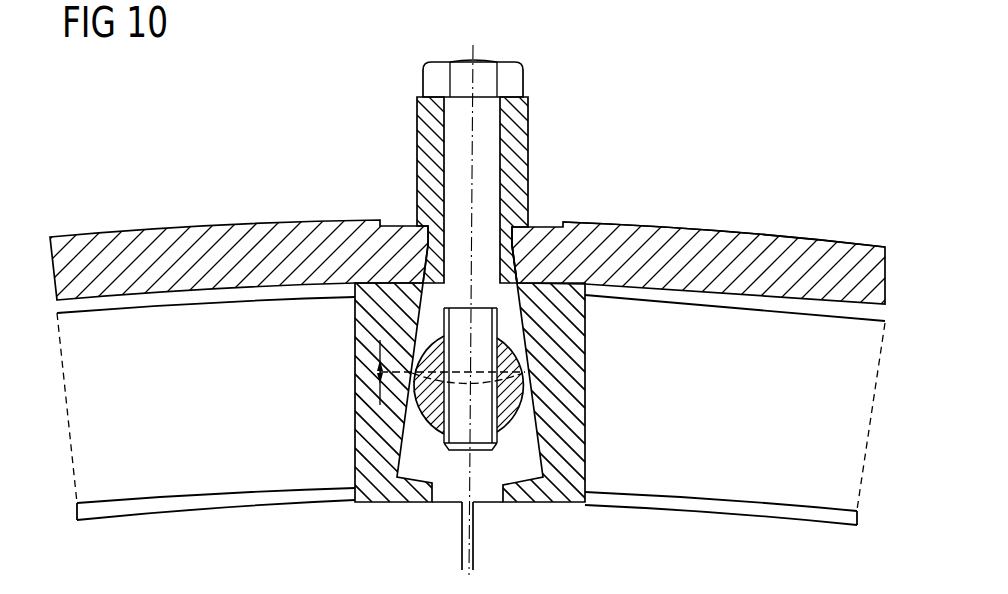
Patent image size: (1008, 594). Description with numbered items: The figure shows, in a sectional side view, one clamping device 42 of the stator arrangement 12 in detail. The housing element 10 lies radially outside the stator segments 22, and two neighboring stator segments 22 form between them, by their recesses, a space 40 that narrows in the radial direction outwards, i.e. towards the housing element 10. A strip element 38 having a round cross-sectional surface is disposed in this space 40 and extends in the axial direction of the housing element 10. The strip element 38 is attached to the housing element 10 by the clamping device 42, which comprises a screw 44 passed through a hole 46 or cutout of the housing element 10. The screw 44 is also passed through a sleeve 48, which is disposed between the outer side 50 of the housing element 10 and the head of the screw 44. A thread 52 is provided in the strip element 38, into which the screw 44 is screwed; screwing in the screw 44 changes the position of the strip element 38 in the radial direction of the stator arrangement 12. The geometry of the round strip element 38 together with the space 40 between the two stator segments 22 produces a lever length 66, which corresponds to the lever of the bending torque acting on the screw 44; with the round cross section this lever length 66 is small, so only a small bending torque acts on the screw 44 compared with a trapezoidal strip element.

The housing element 10 is at (732, 240).
The stator arrangement 12 is at (311, 116).
The stator segment 22 is at (210, 486).
The strip element 38 is at (520, 388).
The space 40 is at (483, 475).
The clamping device 42 is at (432, 44).
The screw 44 is at (514, 80).
The hole 46 is at (508, 252).
The sleeve 48 is at (515, 150).
The outer side 50 is at (688, 228).
The thread 52 is at (430, 445).
The lever length 66 is at (378, 351).